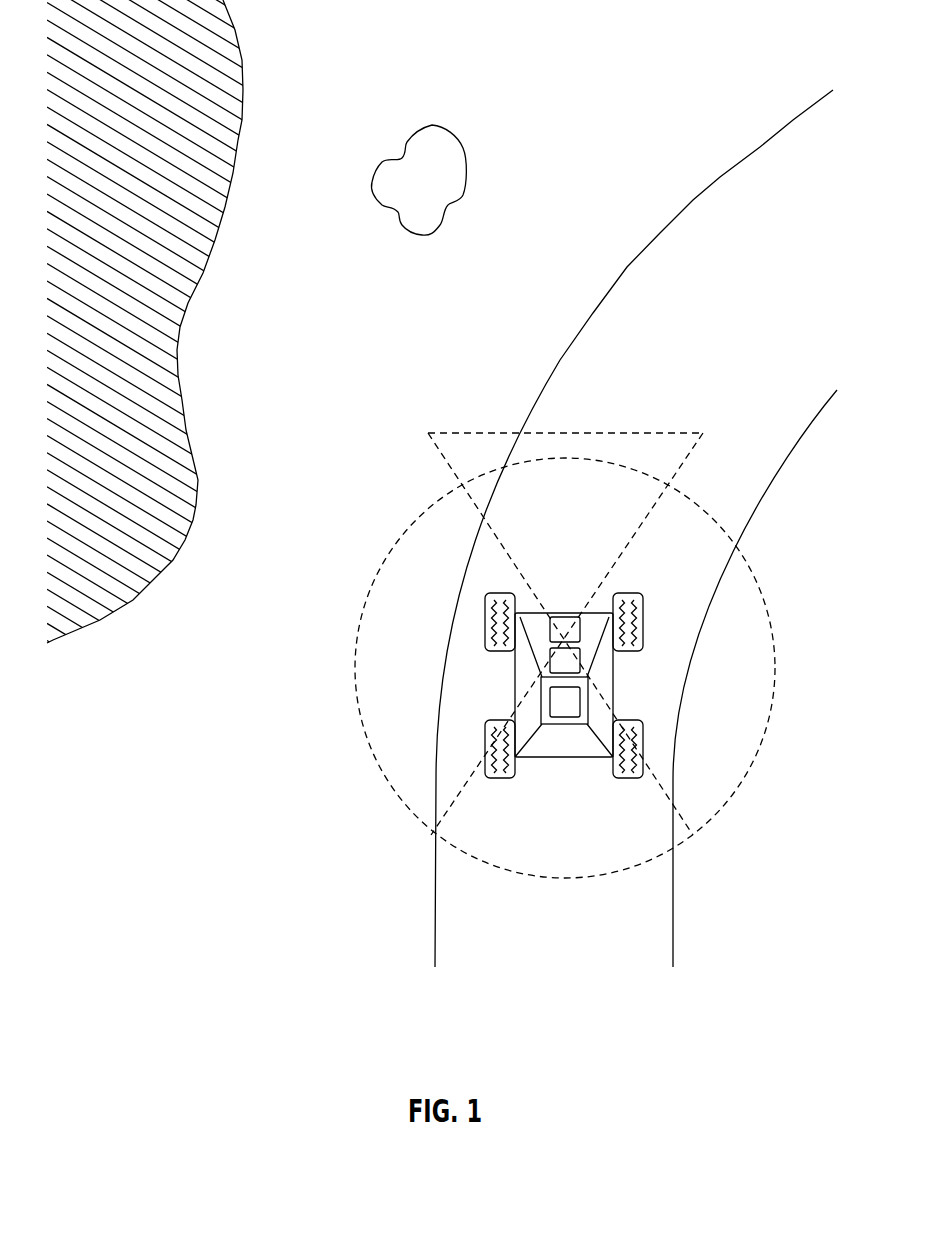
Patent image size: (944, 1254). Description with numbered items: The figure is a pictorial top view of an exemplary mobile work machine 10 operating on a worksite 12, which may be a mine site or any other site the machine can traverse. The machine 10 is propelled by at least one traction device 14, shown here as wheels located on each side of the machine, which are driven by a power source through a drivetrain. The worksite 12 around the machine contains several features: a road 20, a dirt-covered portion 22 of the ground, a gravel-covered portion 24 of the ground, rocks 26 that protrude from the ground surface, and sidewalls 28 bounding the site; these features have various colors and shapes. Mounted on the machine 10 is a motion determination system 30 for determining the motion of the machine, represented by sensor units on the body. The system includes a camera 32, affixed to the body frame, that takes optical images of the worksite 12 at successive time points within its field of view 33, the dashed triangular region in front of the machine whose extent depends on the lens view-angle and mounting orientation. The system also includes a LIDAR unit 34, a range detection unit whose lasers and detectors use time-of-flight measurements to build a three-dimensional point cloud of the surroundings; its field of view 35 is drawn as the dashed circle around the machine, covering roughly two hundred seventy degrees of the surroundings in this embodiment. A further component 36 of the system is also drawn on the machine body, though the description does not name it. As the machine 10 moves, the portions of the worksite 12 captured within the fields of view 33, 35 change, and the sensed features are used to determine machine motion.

The machine 10 is at (545, 758).
The worksite 12 is at (421, 39).
The traction device 14 is at (630, 779).
The road 20 is at (718, 312).
The dirt-covered portion 22 is at (619, 320).
The gravel-covered portion 24 is at (496, 277).
The rocks 26 is at (463, 148).
The sidewalls 28 is at (188, 303).
The motion determination system 30 is at (609, 577).
The camera 32 is at (565, 629).
The field of view 33 is at (446, 462).
The LIDAR unit 34 is at (565, 660).
The field of view 35 is at (352, 668).
The control module 36 is at (565, 702).